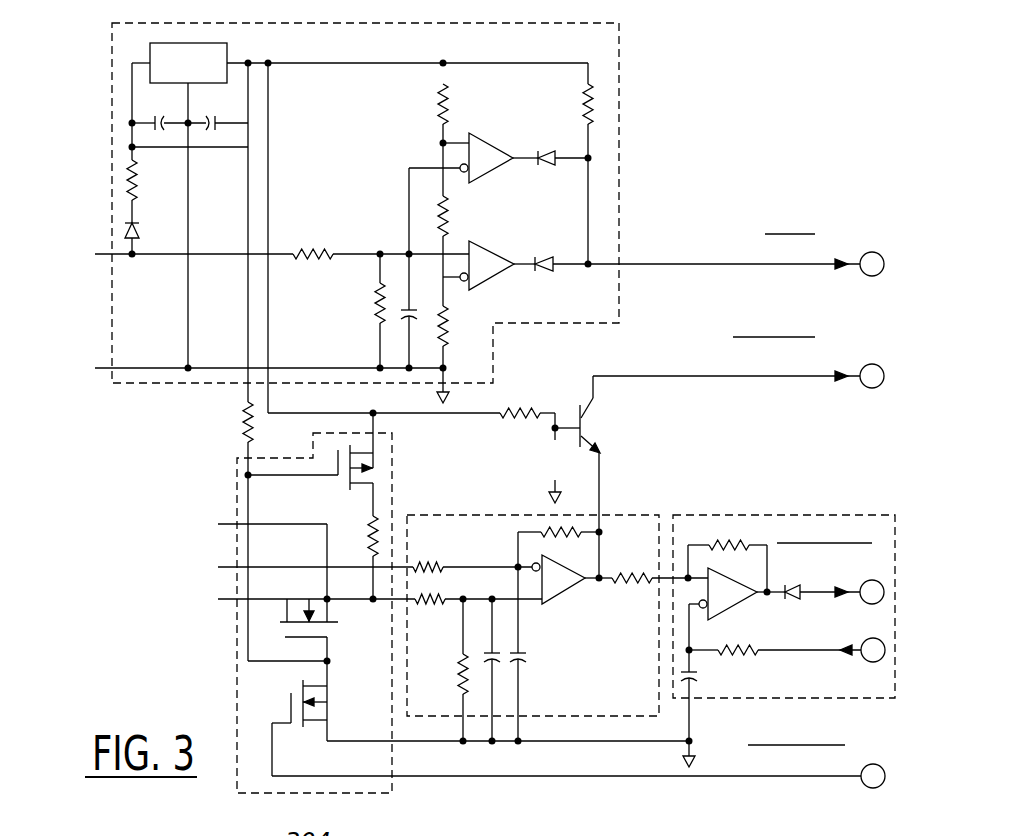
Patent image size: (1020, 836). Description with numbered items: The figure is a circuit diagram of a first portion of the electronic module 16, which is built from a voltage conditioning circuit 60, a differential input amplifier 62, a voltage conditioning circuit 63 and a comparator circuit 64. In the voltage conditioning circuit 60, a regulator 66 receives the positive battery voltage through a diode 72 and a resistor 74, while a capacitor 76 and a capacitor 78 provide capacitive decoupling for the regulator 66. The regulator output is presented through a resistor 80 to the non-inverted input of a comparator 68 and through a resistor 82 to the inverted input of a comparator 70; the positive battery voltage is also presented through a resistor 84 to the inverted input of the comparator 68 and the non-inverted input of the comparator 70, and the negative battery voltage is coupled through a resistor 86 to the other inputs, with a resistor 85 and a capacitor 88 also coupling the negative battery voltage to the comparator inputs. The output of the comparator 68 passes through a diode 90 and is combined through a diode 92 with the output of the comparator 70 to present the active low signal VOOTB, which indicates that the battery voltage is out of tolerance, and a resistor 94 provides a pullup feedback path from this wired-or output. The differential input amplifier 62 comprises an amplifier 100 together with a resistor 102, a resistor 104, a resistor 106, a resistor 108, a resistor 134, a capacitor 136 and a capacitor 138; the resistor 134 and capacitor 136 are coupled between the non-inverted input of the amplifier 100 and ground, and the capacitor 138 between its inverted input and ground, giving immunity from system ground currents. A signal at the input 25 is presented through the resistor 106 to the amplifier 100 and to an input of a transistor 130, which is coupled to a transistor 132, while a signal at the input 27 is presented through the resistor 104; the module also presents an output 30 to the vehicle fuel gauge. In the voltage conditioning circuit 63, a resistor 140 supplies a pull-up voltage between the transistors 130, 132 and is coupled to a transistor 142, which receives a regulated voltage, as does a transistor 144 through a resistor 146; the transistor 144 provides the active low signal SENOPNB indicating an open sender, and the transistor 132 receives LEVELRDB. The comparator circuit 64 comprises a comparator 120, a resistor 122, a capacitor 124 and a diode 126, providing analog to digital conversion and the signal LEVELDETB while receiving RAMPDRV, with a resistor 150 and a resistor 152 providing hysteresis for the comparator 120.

The electronic module 16 is at (760, 120).
The input 25 is at (227, 523).
The input 27 is at (227, 567).
The output 30 is at (228, 603).
The voltage conditioning circuit 60 is at (622, 42).
The differential input amplifier 62 is at (636, 513).
The voltage conditioning circuit 63 is at (240, 458).
The comparator circuit 64 is at (812, 515).
The regulator 66 is at (232, 47).
The comparator 68 is at (487, 138).
The comparator 70 is at (488, 246).
The diode 72 is at (140, 237).
The resistor 74 is at (123, 173).
The capacitor 76 is at (166, 97).
The capacitor 78 is at (220, 120).
The resistor 80 is at (432, 100).
The resistor 82 is at (452, 210).
The resistor 84 is at (306, 250).
The resistor 85 is at (374, 307).
The resistor 86 is at (452, 331).
The capacitor 88 is at (398, 335).
The diode 90 is at (548, 148).
The diode 92 is at (540, 258).
The resistor 94 is at (593, 112).
The amplifier 100 is at (570, 592).
The resistor 102 is at (547, 527).
The resistor 104 is at (428, 557).
The resistor 106 is at (338, 622).
The resistor 108 is at (630, 567).
The comparator 120 is at (736, 600).
The resistor 122 is at (758, 659).
The capacitor 124 is at (697, 677).
The diode 126 is at (797, 597).
The transistor 130 is at (283, 632).
The transistor 132 is at (328, 708).
The resistor 134 is at (458, 663).
The capacitor 136 is at (500, 663).
The capacitor 138 is at (528, 650).
The resistor 140 is at (240, 414).
The transistor 142 is at (373, 457).
The transistor 144 is at (591, 420).
The resistor 146 is at (530, 407).
The resistor 150 is at (378, 518).
The resistor 152 is at (735, 515).